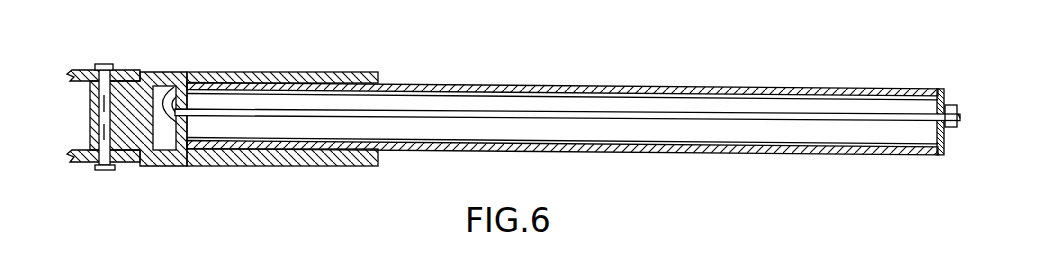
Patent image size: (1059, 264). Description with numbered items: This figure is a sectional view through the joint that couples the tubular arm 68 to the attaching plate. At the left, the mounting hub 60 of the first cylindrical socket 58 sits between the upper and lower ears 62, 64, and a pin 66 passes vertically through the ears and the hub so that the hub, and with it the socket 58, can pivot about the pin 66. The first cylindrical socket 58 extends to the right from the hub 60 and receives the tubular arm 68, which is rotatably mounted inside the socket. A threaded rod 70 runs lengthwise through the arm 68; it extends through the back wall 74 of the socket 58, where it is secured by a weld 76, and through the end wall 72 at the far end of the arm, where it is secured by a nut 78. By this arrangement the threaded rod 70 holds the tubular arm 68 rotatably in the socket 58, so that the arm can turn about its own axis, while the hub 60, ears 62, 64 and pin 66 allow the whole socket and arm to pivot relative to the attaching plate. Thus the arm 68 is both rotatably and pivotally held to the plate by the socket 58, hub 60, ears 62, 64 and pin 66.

The first cylindrical socket 58 is at (324, 165).
The mounting hub 60 is at (142, 73).
The ear 62 is at (84, 160).
The ear 64 is at (72, 70).
The pin 66 is at (107, 72).
The tubular arm 68 is at (448, 156).
The threaded rod 70 is at (260, 113).
The end wall 72 is at (942, 150).
The back wall 74 is at (185, 118).
The weld 76 is at (170, 86).
The nut 78 is at (950, 105).